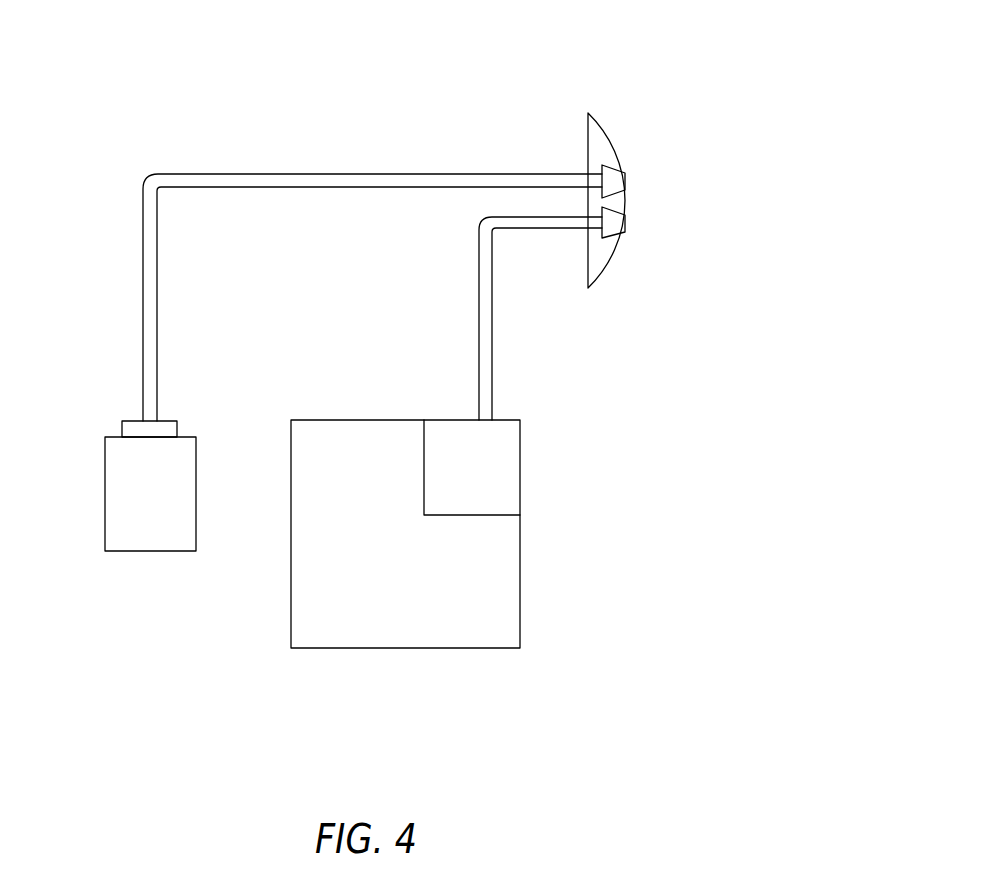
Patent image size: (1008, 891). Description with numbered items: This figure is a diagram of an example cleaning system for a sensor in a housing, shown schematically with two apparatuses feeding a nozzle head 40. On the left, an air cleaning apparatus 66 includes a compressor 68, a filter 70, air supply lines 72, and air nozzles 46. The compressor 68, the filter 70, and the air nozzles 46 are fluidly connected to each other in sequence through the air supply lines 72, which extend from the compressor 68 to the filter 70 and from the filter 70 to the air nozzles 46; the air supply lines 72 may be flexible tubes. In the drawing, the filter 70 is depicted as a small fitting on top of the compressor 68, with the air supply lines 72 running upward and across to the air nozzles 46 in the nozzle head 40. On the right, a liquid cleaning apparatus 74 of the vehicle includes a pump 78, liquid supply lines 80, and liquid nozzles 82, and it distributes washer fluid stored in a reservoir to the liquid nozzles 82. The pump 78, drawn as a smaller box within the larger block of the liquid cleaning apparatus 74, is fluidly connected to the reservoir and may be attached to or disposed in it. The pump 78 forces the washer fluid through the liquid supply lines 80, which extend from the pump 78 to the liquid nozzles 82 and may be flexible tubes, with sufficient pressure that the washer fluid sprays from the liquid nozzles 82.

The nozzle head 40 is at (603, 112).
The air nozzles 46 is at (615, 163).
The liquid nozzles 82 is at (612, 237).
The air supply lines 72 is at (142, 257).
The air cleaning apparatus 66 is at (114, 506).
The compressor 68 is at (103, 513).
The filter 70 is at (132, 420).
The liquid cleaning apparatus 74 is at (405, 573).
The pump 78 is at (460, 516).
The liquid supply lines 80 is at (492, 345).